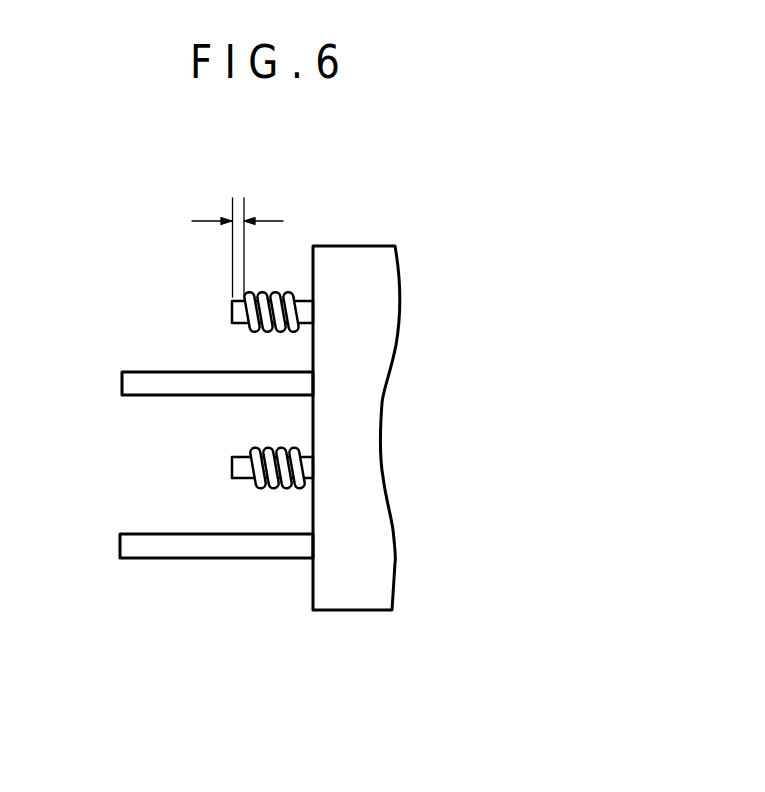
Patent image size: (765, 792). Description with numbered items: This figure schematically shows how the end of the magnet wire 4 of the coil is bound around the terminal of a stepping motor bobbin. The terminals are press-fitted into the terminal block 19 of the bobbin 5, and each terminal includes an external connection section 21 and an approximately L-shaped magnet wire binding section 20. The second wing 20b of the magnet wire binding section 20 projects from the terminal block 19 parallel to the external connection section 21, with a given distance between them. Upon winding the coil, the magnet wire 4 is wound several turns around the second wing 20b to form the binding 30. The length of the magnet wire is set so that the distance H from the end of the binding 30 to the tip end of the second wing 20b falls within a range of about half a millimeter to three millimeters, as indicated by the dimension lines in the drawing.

The terminal block 19 is at (322, 580).
The bobbin 5 is at (301, 468).
The external connection section 21 is at (150, 385).
The second wing 20b is at (233, 313).
The magnet wire binding section 20 is at (190, 403).
The binding 30 is at (273, 290).
The magnet wire 4 is at (333, 307).
The distance from end of binding to tip end of second wing H is at (237, 234).